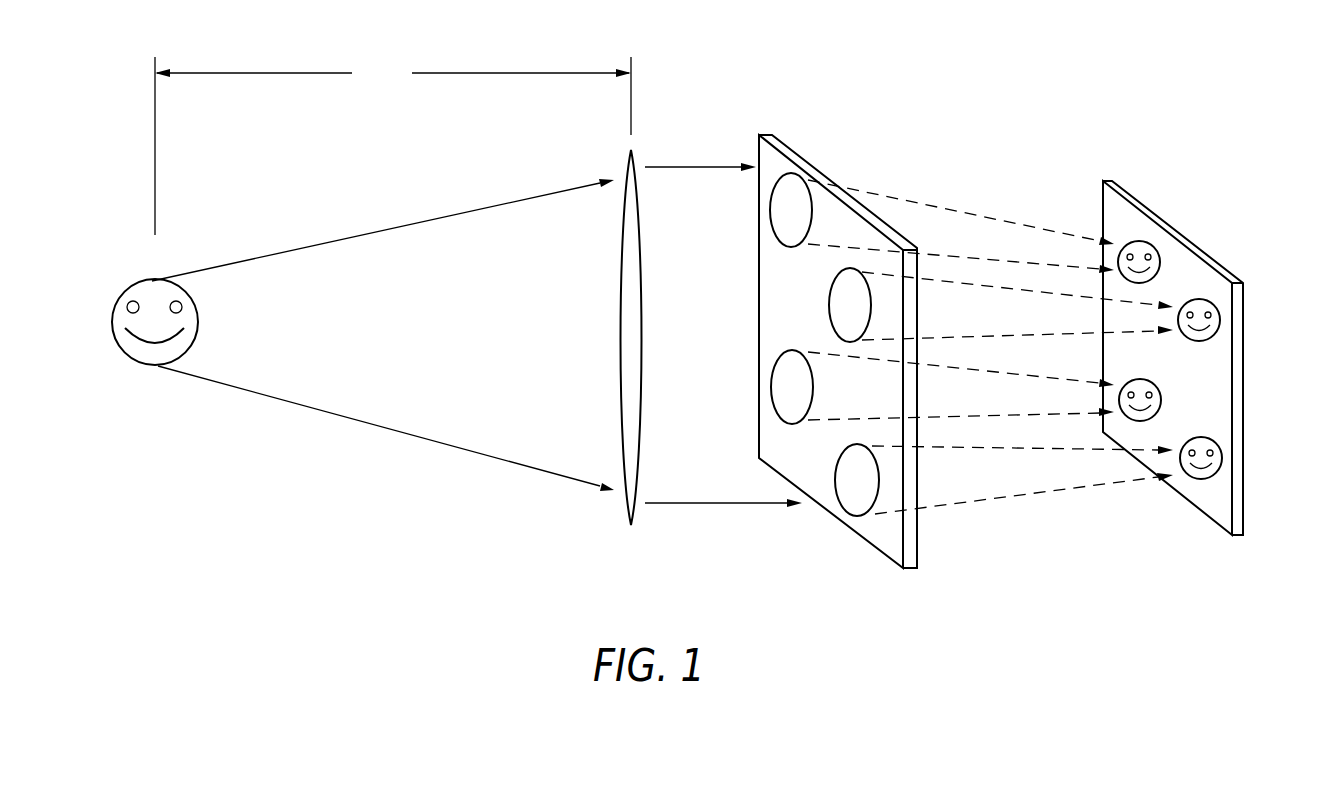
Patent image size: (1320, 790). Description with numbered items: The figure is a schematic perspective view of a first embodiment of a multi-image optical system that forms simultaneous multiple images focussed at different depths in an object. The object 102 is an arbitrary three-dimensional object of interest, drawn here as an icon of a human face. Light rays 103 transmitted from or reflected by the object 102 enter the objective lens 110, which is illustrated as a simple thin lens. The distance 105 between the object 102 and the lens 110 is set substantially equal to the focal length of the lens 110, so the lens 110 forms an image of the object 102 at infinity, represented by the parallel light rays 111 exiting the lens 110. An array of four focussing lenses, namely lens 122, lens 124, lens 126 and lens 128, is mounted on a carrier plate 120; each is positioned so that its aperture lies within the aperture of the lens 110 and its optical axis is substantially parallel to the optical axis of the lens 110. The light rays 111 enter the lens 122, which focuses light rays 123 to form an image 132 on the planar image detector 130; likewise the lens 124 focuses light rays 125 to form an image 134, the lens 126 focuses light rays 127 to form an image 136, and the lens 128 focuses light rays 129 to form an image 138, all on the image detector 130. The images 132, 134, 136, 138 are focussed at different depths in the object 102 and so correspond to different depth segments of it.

The object 102 is at (140, 366).
The light rays 103 is at (283, 252).
The distance 105 is at (393, 146).
The lens 110 is at (631, 527).
The light rays 111 is at (690, 166).
The carrier plate 120 is at (910, 570).
The lens 122 is at (770, 210).
The light rays 123 is at (945, 222).
The lens 124 is at (829, 305).
The light rays 125 is at (975, 298).
The lens 126 is at (771, 387).
The light rays 127 is at (957, 383).
The lens 128 is at (838, 480).
The light rays 129 is at (972, 466).
The image detector 130 is at (1237, 538).
The image 132 is at (1160, 265).
The image 134 is at (1220, 320).
The image 136 is at (1162, 400).
The image 138 is at (1222, 458).